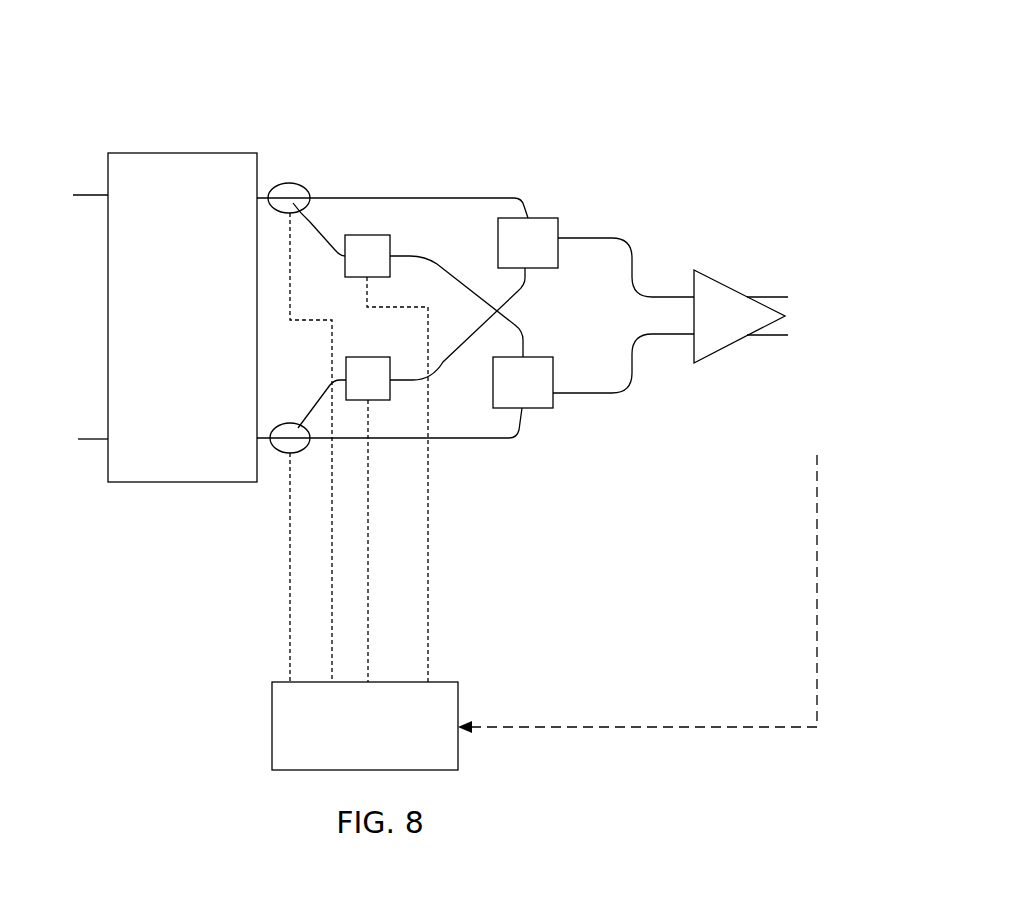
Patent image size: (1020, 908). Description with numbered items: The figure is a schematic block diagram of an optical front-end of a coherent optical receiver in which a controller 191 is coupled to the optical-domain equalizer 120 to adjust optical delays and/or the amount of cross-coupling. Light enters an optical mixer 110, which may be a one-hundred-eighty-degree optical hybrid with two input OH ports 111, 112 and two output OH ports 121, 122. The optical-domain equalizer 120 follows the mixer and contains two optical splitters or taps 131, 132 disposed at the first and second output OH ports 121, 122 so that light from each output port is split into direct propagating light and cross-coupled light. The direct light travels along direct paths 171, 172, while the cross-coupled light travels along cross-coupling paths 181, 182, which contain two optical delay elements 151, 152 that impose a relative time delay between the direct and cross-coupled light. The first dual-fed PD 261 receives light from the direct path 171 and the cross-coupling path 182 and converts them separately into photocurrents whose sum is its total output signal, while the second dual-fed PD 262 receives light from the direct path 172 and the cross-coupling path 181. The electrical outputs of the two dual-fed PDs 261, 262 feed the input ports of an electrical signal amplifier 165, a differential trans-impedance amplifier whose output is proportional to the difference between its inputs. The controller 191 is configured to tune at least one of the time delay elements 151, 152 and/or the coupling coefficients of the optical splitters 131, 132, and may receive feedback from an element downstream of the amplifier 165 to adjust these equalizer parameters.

The optical mixer 110 is at (173, 153).
The input OH port 111 is at (103, 202).
The input OH port 112 is at (108, 438).
The optical-domain equalizer 120 is at (452, 118).
The first output OH port 121 is at (267, 197).
The second output OH port 122 is at (258, 448).
The optical splitter 131 is at (307, 183).
The optical splitter 132 is at (288, 425).
The optical delay element 151 is at (377, 235).
The optical delay element 152 is at (365, 357).
The electrical signal amplifier 165 is at (730, 287).
The direct path 171 is at (448, 200).
The direct path 172 is at (450, 437).
The cross-coupling path 181 is at (340, 258).
The cross-coupling path 182 is at (527, 285).
The controller 191 is at (272, 712).
The first dual-fed PD 261 is at (540, 218).
The second dual-fed PD 262 is at (545, 417).